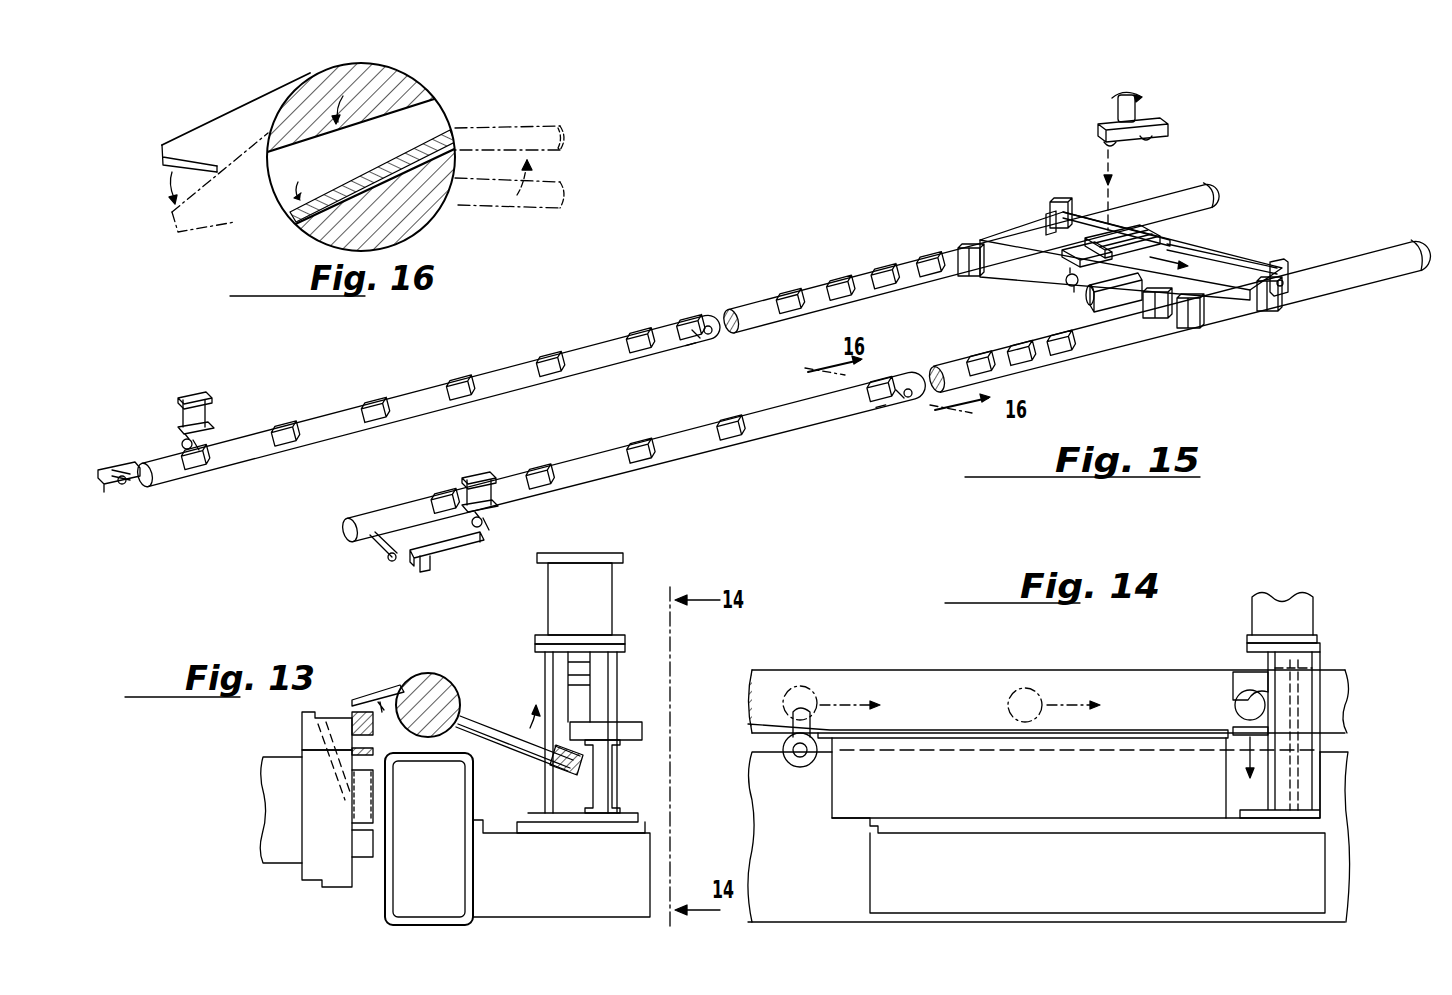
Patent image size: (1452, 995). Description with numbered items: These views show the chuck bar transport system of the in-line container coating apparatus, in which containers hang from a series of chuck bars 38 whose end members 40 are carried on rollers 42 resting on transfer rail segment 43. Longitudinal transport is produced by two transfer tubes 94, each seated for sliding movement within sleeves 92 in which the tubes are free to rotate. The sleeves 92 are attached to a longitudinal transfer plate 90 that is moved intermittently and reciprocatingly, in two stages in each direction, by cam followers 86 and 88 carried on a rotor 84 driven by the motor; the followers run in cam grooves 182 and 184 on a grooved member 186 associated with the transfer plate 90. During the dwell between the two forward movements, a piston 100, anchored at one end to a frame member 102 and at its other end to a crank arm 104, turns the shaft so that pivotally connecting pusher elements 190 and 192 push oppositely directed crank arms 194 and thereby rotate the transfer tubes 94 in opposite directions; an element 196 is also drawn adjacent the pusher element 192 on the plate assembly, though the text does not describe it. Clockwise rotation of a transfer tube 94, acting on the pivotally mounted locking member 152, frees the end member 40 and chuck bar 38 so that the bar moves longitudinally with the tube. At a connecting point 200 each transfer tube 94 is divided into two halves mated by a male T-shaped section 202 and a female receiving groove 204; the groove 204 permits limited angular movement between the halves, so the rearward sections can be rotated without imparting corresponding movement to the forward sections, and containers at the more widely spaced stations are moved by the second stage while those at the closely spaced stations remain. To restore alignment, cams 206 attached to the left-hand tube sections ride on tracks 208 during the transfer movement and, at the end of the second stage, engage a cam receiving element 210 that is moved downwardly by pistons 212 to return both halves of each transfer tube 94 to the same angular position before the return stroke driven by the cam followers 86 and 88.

In FIG. 13, the chuck bar 38 is at (275, 815).
In FIG. 13, the end member 40 is at (328, 793).
In FIG. 13, the roller 42 is at (358, 730).
In FIG. 13, the transfer rail segment 43 is at (385, 885).
In FIG. 14, the transfer rail segment 43 is at (775, 818).
In FIG. 15, the rotor 84 is at (1142, 112).
In FIG. 15, the cam follower 86 is at (1100, 146).
In FIG. 15, the cam follower 88 is at (1156, 138).
In FIG. 15, the longitudinal transfer plate 90 is at (1010, 238).
In FIG. 15, the sleeve 92 is at (958, 256).
In FIG. 16, the transfer tube 94 is at (322, 90).
In FIG. 15, the transfer tube 94 is at (1190, 202).
In FIG. 13, the transfer tube 94 is at (440, 684).
In FIG. 14, the transfer tube 94 is at (855, 680).
In FIG. 15, the piston 100 is at (1108, 302).
In FIG. 15, the frame member 102 is at (1152, 318).
In FIG. 15, the crank arm 104 is at (1068, 286).
In FIG. 16, the locking member 152 is at (215, 133).
In FIG. 15, the locking member 152 is at (643, 355).
In FIG. 13, the locking member 152 is at (368, 695).
In FIG. 15, the cam groove 182 is at (1172, 232).
In FIG. 15, the cam groove 184 is at (1090, 245).
In FIG. 15, the grooved member 186 is at (1040, 262).
In FIG. 15, the pusher element 190 is at (1240, 256).
In FIG. 15, the pusher element 192 is at (1092, 214).
In FIG. 15, the crank arm 194 is at (1288, 287).
In FIG. 15, the stop 196 is at (1050, 222).
In FIG. 15, the connecting point 200 is at (683, 312).
In FIG. 16, the male T-shaped section 202 is at (290, 214).
In FIG. 15, the male T-shaped section 202 is at (700, 340).
In FIG. 16, the female receiving groove 204 is at (410, 88).
In FIG. 15, the female receiving groove 204 is at (712, 322).
In FIG. 16, the cam 206 is at (565, 115).
In FIG. 15, the cam 206 is at (128, 482).
In FIG. 13, the cam 206 is at (490, 720).
In FIG. 14, the cam 206 is at (1030, 690).
In FIG. 15, the track 208 is at (124, 465).
In FIG. 13, the track 208 is at (640, 730).
In FIG. 14, the track 208 is at (925, 724).
In FIG. 15, the cam follower roller 210 is at (200, 442).
In FIG. 13, the cam follower roller 210 is at (580, 698).
In FIG. 14, the cam follower roller 210 is at (1240, 672).
In FIG. 15, the piston 212 is at (200, 405).
In FIG. 13, the piston 212 is at (595, 592).
In FIG. 14, the piston 212 is at (1300, 612).